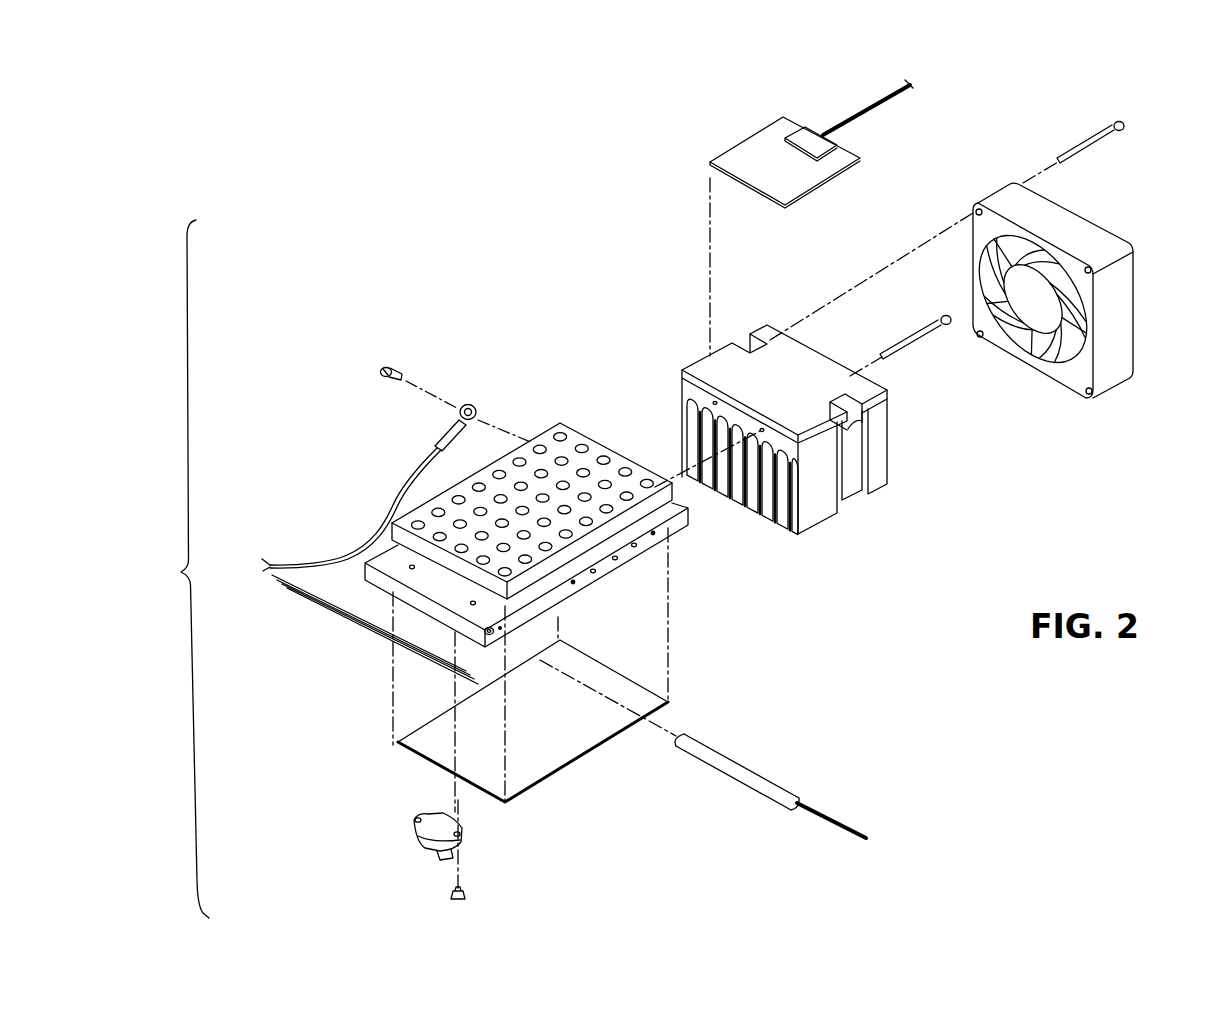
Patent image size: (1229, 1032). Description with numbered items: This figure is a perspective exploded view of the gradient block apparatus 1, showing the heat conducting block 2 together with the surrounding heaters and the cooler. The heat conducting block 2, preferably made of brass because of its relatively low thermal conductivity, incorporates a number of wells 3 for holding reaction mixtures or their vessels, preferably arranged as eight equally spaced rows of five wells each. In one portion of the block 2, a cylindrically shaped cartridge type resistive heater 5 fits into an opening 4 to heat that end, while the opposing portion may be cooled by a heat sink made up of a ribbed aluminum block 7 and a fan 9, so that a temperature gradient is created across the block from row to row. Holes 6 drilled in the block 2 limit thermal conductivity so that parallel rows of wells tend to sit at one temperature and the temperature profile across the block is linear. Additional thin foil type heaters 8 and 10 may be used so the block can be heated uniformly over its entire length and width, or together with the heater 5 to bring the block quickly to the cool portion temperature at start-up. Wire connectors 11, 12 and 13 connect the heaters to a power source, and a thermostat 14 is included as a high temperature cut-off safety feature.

The gradient block apparatus 1 is at (186, 569).
The heat conducting block 2 is at (577, 433).
The wells 3 is at (605, 459).
The opening 4 is at (486, 634).
The heater 5 is at (750, 770).
The holes 6 is at (653, 533).
The ribbed aluminum block 7 is at (787, 396).
The heater 8 is at (556, 742).
The fan 9 is at (1120, 315).
The heater 10 is at (785, 182).
The wire connector 11 is at (318, 604).
The wire connector 12 is at (870, 105).
The wire connector 13 is at (827, 817).
The thermostat 14 is at (418, 842).